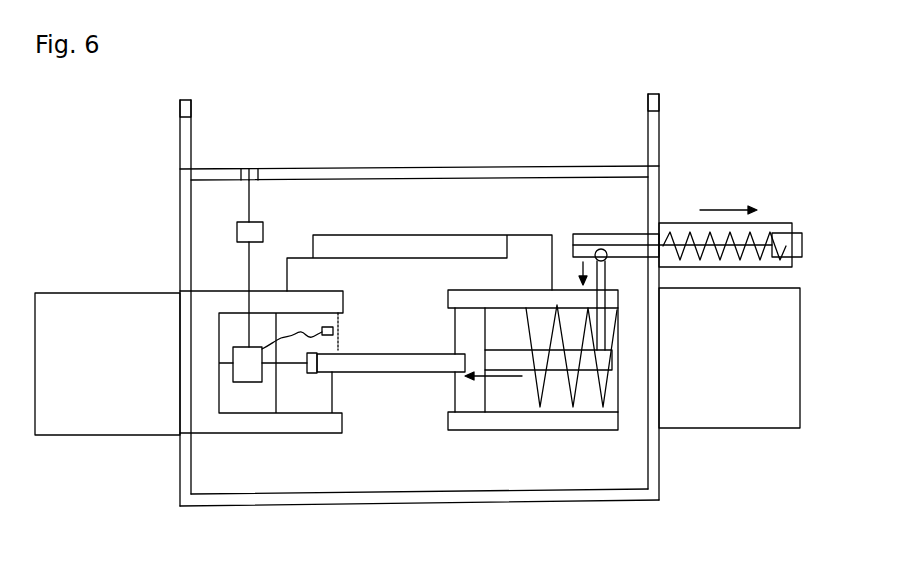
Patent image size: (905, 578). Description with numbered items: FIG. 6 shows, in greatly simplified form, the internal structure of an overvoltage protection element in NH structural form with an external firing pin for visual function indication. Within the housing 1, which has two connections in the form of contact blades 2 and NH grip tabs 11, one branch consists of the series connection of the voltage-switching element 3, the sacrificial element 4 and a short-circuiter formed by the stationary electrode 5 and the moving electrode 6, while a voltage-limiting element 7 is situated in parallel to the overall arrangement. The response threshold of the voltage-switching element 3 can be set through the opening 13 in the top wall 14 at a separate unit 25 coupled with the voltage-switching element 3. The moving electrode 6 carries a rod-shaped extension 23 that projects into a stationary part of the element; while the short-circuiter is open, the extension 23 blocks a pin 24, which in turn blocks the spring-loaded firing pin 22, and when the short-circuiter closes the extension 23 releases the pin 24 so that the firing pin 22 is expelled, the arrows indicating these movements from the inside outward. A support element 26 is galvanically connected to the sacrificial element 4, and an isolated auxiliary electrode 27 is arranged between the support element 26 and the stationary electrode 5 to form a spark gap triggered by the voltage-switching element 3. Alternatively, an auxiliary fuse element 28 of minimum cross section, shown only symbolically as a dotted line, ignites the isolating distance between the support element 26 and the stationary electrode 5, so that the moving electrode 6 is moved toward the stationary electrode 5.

The housing 1 is at (573, 495).
The contact blades 2 is at (728, 465).
The voltage-switching element 3 is at (240, 370).
The sacrificial element 4 is at (388, 350).
The stationary electrode 5 is at (320, 422).
The moving electrode 6 is at (473, 395).
The voltage-limiting element 7 is at (445, 245).
The NH grip tabs 11 is at (640, 113).
The opening 13 is at (247, 165).
The top wall 14 is at (325, 168).
The firing pin 22 is at (802, 238).
The rod-shaped extension 23 is at (557, 360).
The pin 24 is at (602, 272).
The separate unit 25 is at (250, 232).
The support element 26 is at (317, 372).
The auxiliary electrode 27 is at (318, 320).
The auxiliary fuse element 28 is at (338, 337).